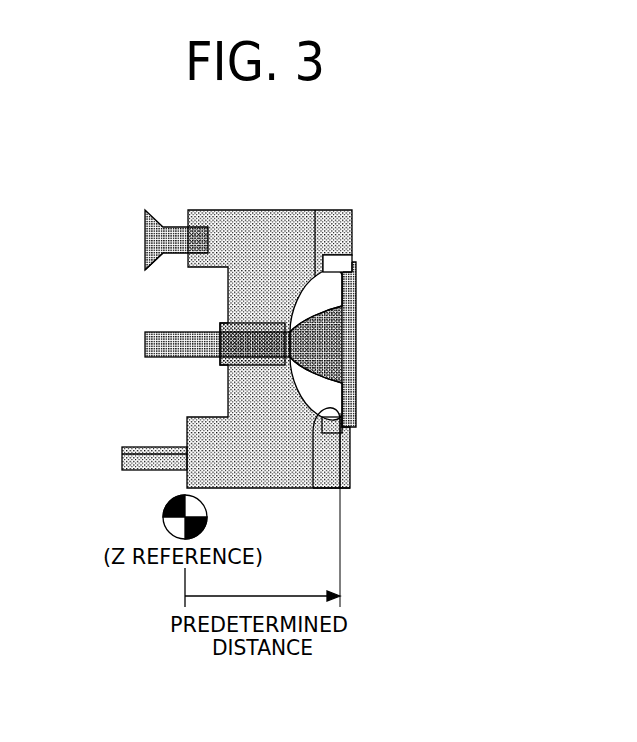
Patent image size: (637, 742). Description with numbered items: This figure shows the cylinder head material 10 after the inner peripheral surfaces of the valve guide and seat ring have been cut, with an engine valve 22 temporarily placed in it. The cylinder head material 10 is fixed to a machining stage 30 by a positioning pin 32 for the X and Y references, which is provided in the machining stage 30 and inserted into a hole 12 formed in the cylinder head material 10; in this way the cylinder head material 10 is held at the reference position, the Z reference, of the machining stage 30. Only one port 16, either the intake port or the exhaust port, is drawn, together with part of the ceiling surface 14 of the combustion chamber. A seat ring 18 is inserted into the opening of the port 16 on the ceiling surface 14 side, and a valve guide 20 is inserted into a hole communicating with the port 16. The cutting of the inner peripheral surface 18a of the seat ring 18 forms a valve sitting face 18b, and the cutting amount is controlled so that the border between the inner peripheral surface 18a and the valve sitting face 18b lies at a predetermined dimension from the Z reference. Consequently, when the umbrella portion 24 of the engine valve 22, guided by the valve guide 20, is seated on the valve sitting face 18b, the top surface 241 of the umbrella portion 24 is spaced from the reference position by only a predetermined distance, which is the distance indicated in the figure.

The cylinder head material 10 is at (252, 325).
The hole 12 is at (201, 210).
The ceiling surface 14 is at (354, 235).
The port 16 is at (315, 210).
The seat ring 18 is at (356, 262).
The inner peripheral surface 18a is at (356, 286).
The valve sitting face 18b is at (356, 272).
The valve guide 20 is at (220, 325).
The engine valve 22 is at (134, 334).
The umbrella portion 24 is at (357, 366).
The top surface 241 is at (316, 486).
The machining stage 30 is at (150, 447).
The positioning pin 32 is at (157, 272).